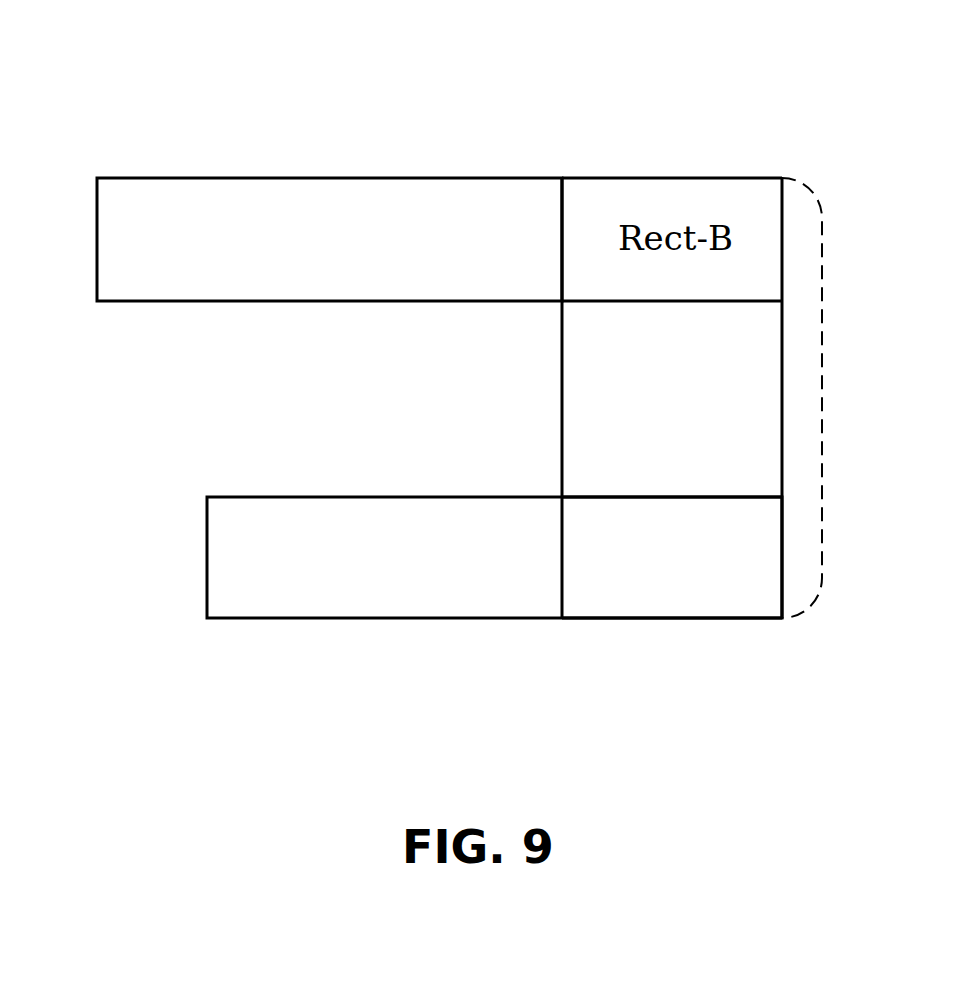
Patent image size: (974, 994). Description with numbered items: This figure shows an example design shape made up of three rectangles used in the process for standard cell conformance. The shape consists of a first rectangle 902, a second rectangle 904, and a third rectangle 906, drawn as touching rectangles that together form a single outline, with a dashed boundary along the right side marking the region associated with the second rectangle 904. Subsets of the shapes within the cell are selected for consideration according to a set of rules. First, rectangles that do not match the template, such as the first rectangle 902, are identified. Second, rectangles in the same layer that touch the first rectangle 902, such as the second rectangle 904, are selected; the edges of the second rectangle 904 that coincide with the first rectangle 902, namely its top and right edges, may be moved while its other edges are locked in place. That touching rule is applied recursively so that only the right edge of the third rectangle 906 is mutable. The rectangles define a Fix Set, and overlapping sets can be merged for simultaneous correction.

The Rect-A 902 is at (228, 174).
The Rect-B 904 is at (816, 397).
The Rect-C 906 is at (300, 622).